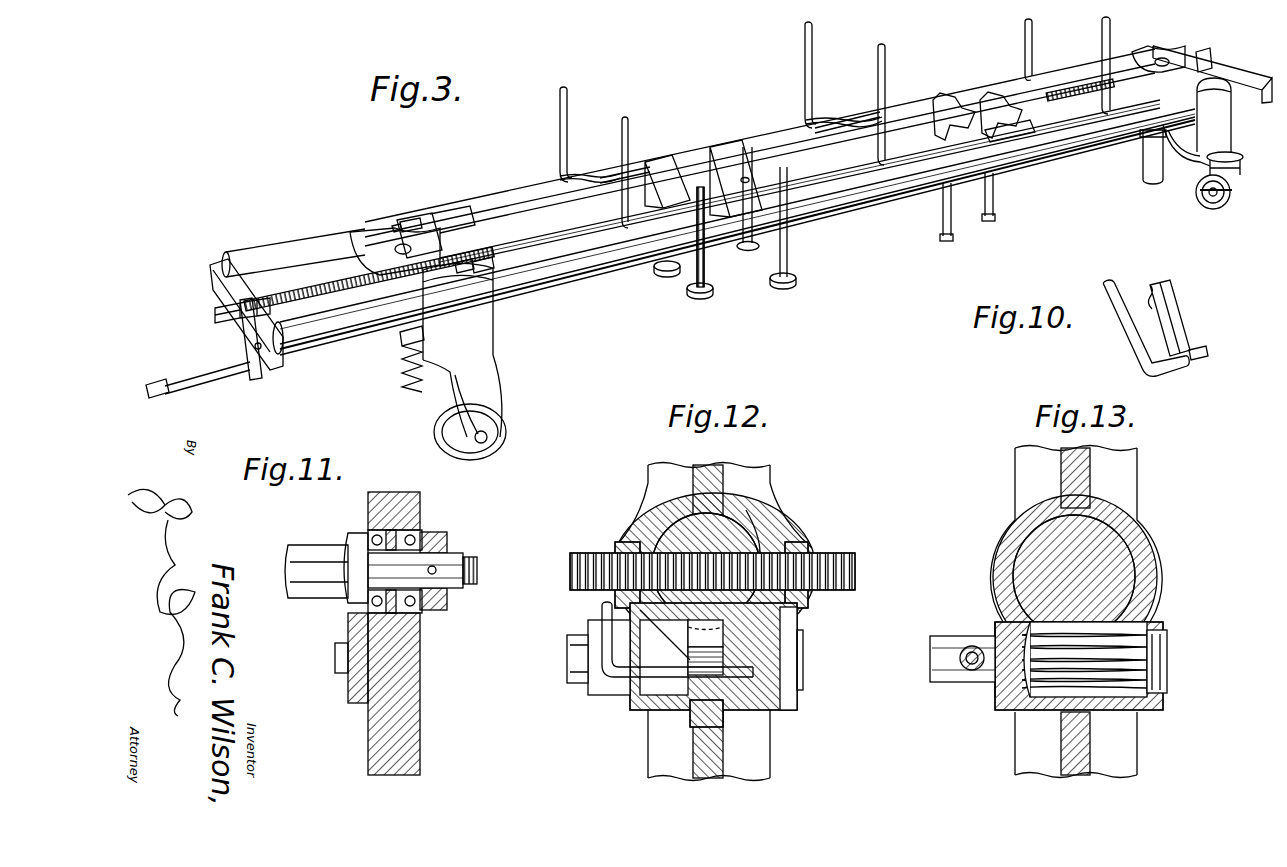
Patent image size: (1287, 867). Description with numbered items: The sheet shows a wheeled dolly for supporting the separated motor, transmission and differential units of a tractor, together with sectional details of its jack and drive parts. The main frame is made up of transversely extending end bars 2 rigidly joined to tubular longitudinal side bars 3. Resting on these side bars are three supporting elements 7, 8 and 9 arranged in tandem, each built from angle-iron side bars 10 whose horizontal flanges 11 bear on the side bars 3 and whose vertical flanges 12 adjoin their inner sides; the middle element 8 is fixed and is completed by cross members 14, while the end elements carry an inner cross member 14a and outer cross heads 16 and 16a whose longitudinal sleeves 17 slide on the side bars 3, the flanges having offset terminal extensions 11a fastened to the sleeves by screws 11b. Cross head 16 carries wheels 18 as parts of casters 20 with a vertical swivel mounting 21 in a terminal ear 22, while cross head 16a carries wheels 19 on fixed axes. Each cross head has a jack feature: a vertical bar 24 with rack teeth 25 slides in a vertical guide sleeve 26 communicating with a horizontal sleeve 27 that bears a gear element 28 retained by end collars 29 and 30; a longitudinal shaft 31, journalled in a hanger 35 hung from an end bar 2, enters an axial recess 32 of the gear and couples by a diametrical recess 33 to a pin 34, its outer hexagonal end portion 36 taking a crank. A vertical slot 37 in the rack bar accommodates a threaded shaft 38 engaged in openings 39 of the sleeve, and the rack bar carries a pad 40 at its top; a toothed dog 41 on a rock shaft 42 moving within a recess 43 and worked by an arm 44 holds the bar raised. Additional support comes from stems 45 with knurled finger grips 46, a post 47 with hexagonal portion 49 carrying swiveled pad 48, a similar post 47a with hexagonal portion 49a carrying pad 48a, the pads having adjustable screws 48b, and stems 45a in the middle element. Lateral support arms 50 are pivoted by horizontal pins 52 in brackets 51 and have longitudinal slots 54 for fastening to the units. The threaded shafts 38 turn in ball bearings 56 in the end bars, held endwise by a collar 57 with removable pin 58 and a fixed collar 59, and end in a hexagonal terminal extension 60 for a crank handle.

In FIG. 3, the end bar 2 is at (214, 263).
In FIG. 11, the end bar 2 is at (390, 493).
In FIG. 3, the side bar 3 is at (242, 253).
In FIG. 3, the supporting element 7 is at (963, 88).
In FIG. 3, the supporting element 8 is at (762, 133).
In FIG. 3, the supporting element 9 is at (526, 187).
In FIG. 3, the side bar 10 is at (500, 195).
In FIG. 3, the horizontal flange 11 is at (447, 227).
In FIG. 3, the offset terminal extension 11a is at (417, 222).
In FIG. 3, the screw 11b is at (397, 225).
In FIG. 3, the vertical flange 12 is at (475, 227).
In FIG. 3, the cross member 14 is at (736, 155).
In FIG. 3, the cross member 14a is at (650, 170).
In FIG. 3, the cross head 16 is at (1188, 150).
In FIG. 3, the cross head 16a is at (482, 358).
In FIG. 12, the cross head 16a is at (772, 482).
In FIG. 13, the cross head 16a is at (1024, 478).
In FIG. 3, the longitudinal sleeve 17 is at (478, 304).
In FIG. 3, the supporting wheel 18 is at (1198, 192).
In FIG. 3, the supporting wheel 19 is at (494, 410).
In FIG. 3, the caster 20 is at (1232, 188).
In FIG. 3, the vertical swivel mounting 21 is at (1244, 155).
In FIG. 3, the terminal ear 22 is at (1242, 170).
In FIG. 3, the vertical bar 24 is at (410, 370).
In FIG. 12, the vertical bar 24 is at (676, 540).
In FIG. 13, the vertical bar 24 is at (1030, 576).
In FIG. 3, the rack teeth 25 is at (415, 385).
In FIG. 12, the rack teeth 25 is at (690, 640).
In FIG. 12, the vertical guide sleeve 26 is at (660, 520).
In FIG. 13, the vertical guide sleeve 26 is at (1010, 550).
In FIG. 12, the horizontal sleeve 27 is at (645, 698).
In FIG. 13, the horizontal sleeve 27 is at (1010, 700).
In FIG. 12, the gear element 28 is at (600, 700).
In FIG. 13, the gear element 28 is at (1158, 700).
In FIG. 12, the end collar 29 is at (625, 700).
In FIG. 13, the end collar 29 is at (1000, 700).
In FIG. 12, the end collar 30 is at (800, 658).
In FIG. 13, the end collar 30 is at (1168, 690).
In FIG. 3, the longitudinal shaft 31 is at (208, 394).
In FIG. 12, the longitudinal shaft 31 is at (570, 654).
In FIG. 13, the longitudinal shaft 31 is at (944, 635).
In FIG. 13, the axial recess 32 is at (994, 626).
In FIG. 13, the diametrical recess 33 is at (960, 654).
In FIG. 13, the pin 34 is at (966, 660).
In FIG. 3, the hanger 35 is at (256, 381).
In FIG. 11, the hanger 35 is at (348, 690).
In FIG. 3, the end portion 36 is at (158, 400).
In FIG. 3, the vertical slot 37 is at (1142, 144).
In FIG. 12, the vertical slot 37 is at (768, 520).
In FIG. 3, the threaded shaft 38 is at (300, 292).
In FIG. 11, the threaded shaft 38 is at (470, 553).
In FIG. 12, the threaded shaft 38 is at (830, 553).
In FIG. 12, the opening 39 is at (618, 548).
In FIG. 3, the pad 40 is at (375, 240).
In FIG. 10, the toothed dog 41 is at (1182, 311).
In FIG. 12, the toothed dog 41 is at (724, 636).
In FIG. 10, the rock shaft 42 is at (1208, 352).
In FIG. 12, the rock shaft 42 is at (735, 672).
In FIG. 12, the recess 43 is at (712, 712).
In FIG. 10, the arm 44 is at (1124, 351).
In FIG. 12, the arm 44 is at (600, 610).
In FIG. 3, the vertical stem 45 is at (705, 272).
In FIG. 3, the stem 45a is at (754, 240).
In FIG. 3, the knurled finger grip 46 is at (665, 272).
In FIG. 3, the vertical post 47 is at (995, 193).
In FIG. 3, the vertical post 47a is at (942, 218).
In FIG. 3, the pad 48 is at (990, 98).
In FIG. 3, the pad 48a is at (940, 100).
In FIG. 3, the screw 48b is at (1022, 125).
In FIG. 3, the hexagonal portion 49 is at (996, 219).
In FIG. 3, the hexagonal portion 49a is at (940, 238).
In FIG. 3, the arm 50 is at (622, 136).
In FIG. 3, the bracket 51 is at (616, 174).
In FIG. 3, the horizontal pin 52 is at (600, 175).
In FIG. 3, the longitudinal slot 54 is at (568, 102).
In FIG. 11, the ball bearing 56 is at (372, 534).
In FIG. 11, the collar 57 is at (436, 612).
In FIG. 11, the removable pin 58 is at (436, 574).
In FIG. 11, the fixed collar 59 is at (350, 602).
In FIG. 3, the hexagonal terminal extension 60 is at (214, 316).
In FIG. 11, the hexagonal terminal extension 60 is at (300, 598).